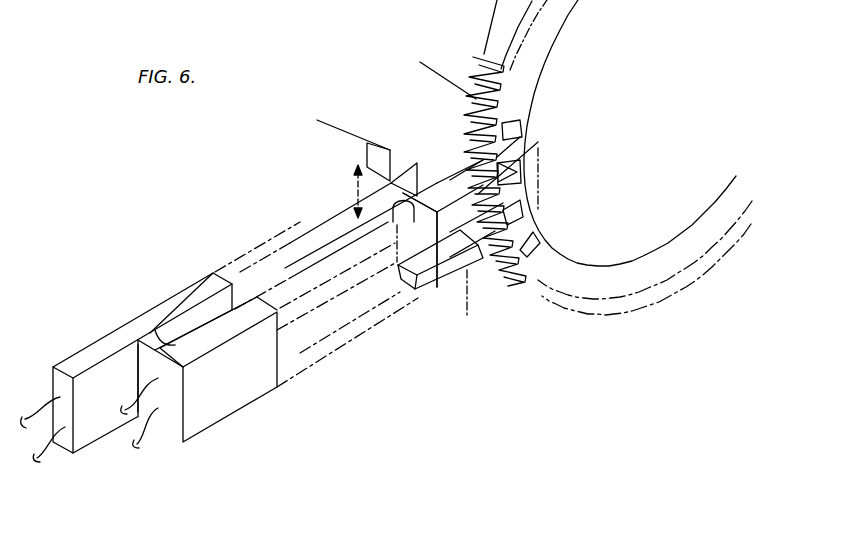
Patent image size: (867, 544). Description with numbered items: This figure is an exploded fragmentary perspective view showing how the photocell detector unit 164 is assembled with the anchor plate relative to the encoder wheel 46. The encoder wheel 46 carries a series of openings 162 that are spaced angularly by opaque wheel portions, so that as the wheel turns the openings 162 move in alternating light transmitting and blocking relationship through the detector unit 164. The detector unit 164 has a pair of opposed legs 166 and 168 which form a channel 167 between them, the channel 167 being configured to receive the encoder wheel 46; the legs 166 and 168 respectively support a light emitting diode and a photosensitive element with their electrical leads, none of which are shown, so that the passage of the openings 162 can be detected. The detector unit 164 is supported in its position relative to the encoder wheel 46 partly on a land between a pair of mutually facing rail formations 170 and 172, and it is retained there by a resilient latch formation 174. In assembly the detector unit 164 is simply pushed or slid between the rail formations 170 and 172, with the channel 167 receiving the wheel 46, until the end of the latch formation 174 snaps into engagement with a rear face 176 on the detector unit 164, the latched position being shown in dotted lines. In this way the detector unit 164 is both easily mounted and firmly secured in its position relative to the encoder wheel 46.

The encoder wheel 46 is at (492, 53).
The openings 162 is at (536, 228).
The photocell detector unit 164 is at (203, 435).
The leg 166 is at (237, 318).
The channel 167 is at (182, 323).
The leg 168 is at (199, 292).
The rail formation 170 is at (428, 195).
The rail formation 172 is at (460, 268).
The resilient latch formation 174 is at (378, 198).
The rear face 176 is at (158, 368).